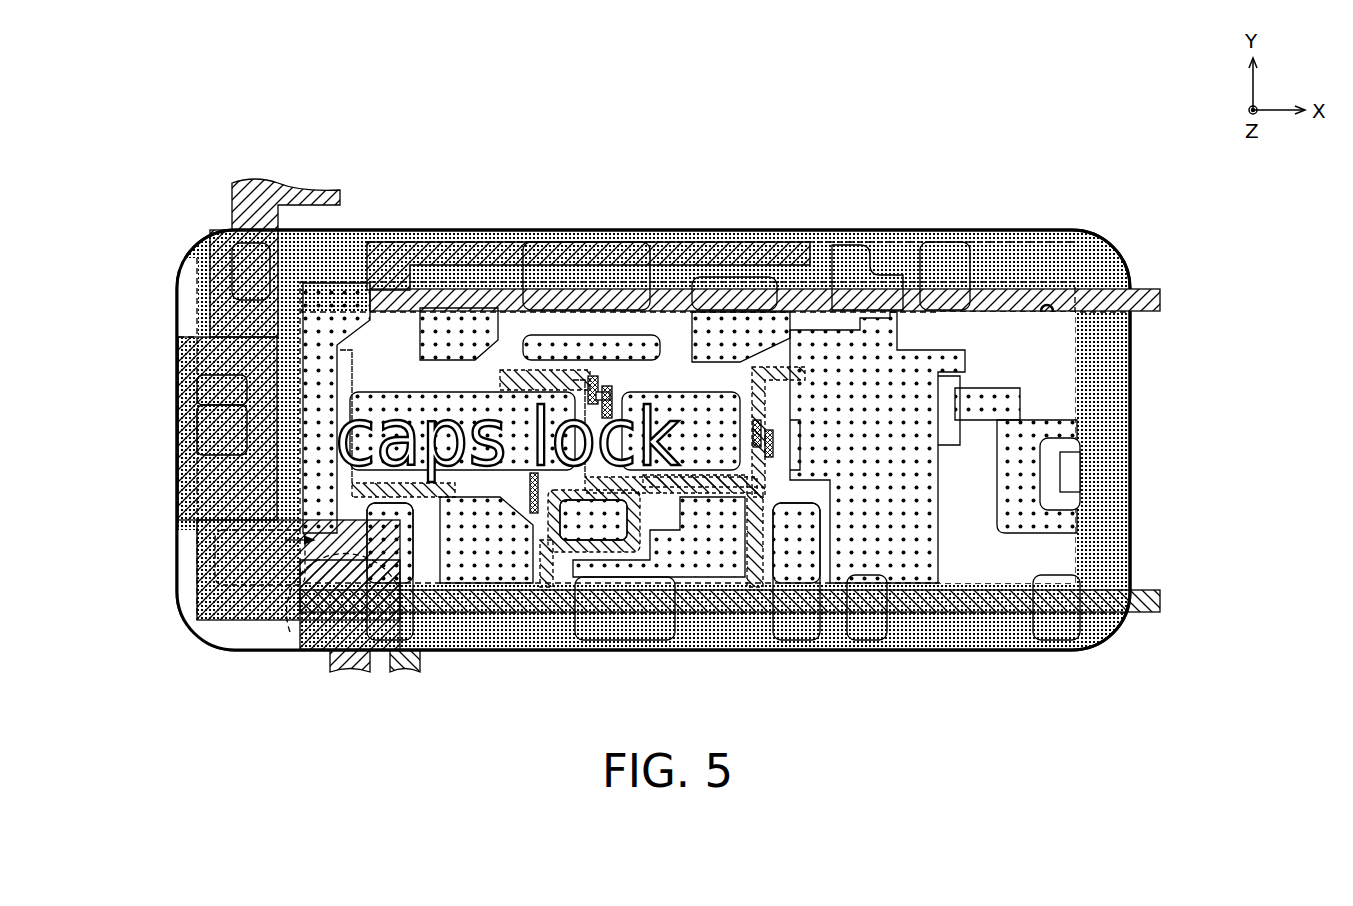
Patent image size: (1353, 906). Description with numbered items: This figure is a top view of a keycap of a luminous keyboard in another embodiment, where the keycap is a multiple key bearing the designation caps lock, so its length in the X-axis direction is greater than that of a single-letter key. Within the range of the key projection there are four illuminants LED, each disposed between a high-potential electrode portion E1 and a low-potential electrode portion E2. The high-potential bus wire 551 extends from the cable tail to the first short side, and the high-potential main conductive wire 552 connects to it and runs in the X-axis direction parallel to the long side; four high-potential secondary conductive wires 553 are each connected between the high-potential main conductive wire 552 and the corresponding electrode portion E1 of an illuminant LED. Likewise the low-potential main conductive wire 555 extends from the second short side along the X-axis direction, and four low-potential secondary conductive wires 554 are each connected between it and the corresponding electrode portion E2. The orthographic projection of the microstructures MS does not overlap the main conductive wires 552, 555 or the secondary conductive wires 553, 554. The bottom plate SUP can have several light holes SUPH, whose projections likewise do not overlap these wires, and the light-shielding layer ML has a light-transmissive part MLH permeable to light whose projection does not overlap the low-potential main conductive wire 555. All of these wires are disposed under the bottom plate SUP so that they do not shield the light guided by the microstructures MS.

The high-potential bus wire 551 is at (232, 218).
The high-potential main conductive wire 552 is at (993, 290).
The high-potential secondary conductive wire 553 is at (800, 355).
The low-potential secondary conductive wire 554 is at (840, 530).
The low-potential main conductive wire 555 is at (1160, 605).
The electrode portion E1 is at (590, 400).
The electrode portion E2 is at (610, 418).
The illuminant LED is at (610, 392).
The bottom plate SUP is at (1055, 360).
The light hole SUPH is at (1062, 412).
The microstructure MS is at (1045, 520).
The light-transmissive part MLH is at (197, 585).
The light-shielding layer ML is at (291, 632).